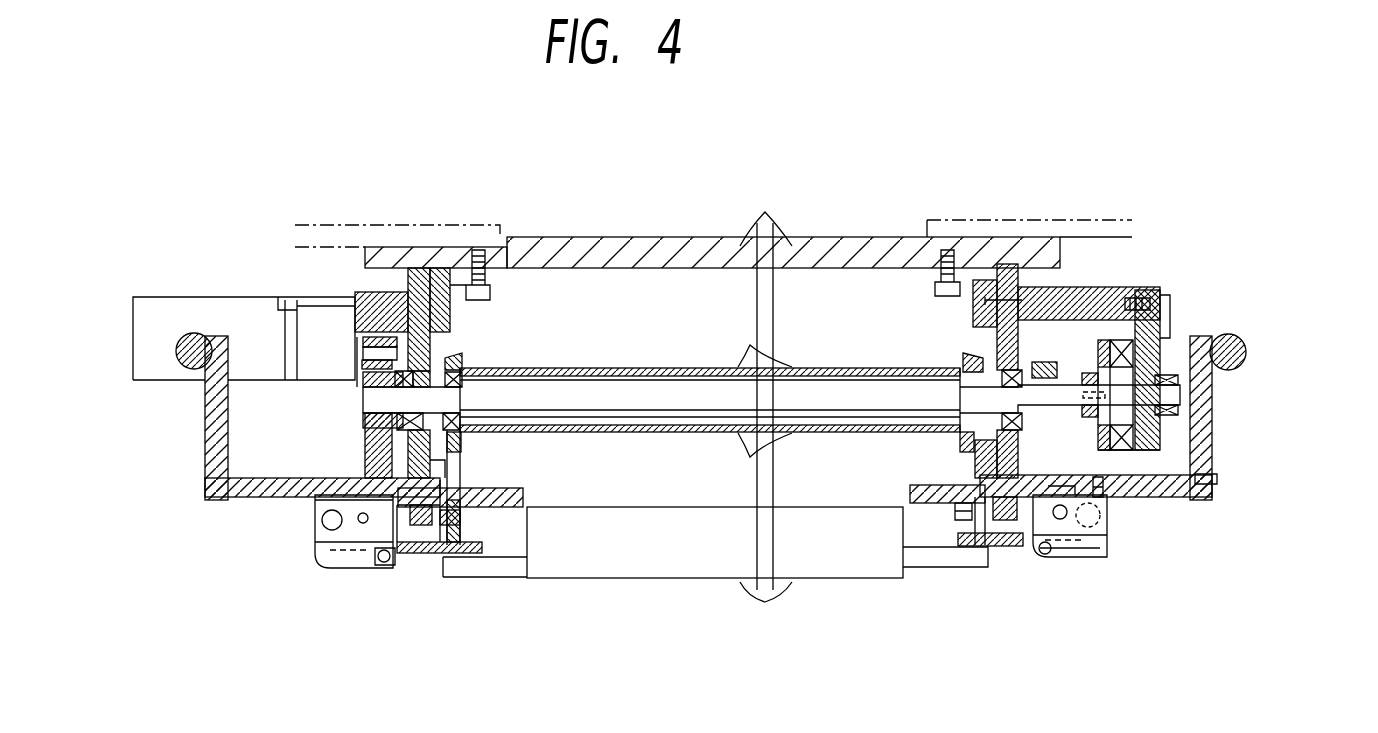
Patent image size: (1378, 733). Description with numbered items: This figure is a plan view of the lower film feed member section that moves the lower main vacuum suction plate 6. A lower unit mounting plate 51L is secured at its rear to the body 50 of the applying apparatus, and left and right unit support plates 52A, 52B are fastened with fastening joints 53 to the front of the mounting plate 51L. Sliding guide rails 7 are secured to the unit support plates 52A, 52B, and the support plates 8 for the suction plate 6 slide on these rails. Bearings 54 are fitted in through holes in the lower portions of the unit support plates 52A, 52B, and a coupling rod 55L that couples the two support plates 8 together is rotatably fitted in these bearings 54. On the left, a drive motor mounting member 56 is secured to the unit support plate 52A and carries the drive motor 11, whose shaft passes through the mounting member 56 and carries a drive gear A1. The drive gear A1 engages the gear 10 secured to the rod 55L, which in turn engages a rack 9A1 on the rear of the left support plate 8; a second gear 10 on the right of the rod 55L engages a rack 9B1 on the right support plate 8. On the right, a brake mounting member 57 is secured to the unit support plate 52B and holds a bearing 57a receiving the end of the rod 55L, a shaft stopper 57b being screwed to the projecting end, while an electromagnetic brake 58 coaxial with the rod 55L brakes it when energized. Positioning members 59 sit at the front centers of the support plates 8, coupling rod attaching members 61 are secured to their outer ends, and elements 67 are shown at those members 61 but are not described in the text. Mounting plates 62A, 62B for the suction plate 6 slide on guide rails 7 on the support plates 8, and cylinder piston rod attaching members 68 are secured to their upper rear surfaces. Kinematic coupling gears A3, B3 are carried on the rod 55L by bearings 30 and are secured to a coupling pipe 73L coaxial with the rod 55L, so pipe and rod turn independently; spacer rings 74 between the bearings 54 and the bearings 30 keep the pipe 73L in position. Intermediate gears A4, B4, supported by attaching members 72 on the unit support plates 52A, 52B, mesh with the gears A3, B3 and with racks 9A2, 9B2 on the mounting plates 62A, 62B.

The body 50 is at (385, 235).
The lower unit mounting plate 51L is at (765, 212).
The drive motor 11 is at (212, 310).
The stopper 67 is at (178, 346).
The coupling rod attaching members 61 is at (214, 442).
The support plates 8 is at (232, 500).
The drive motor mounting member 56 is at (382, 300).
The unit support plate 52A is at (418, 275).
The fastening joints 53 is at (478, 275).
The drive gear A1 is at (358, 338).
The gear 10 is at (365, 383).
The bearings 54 is at (372, 420).
The spacer rings 74 is at (450, 352).
The main vacuum suction plate kinematic coupling gear A3 is at (465, 366).
The bearings 30 is at (470, 392).
The main vacuum suction plate coupling pipe 73L is at (750, 345).
The coupling rod 55L is at (750, 457).
The intermediate gear attaching members 72 is at (463, 440).
The intermediate gear A4 is at (463, 466).
The rack 9A1 is at (362, 455).
The unit support plate 52B is at (1005, 280).
The main vacuum suction plate kinematic coupling gear B3 is at (980, 350).
The intermediate gear B4 is at (965, 464).
The brake mounting member 57 is at (1162, 290).
The bearing 57a is at (1167, 332).
The shaft stopper 57b is at (1182, 386).
The electromagnetic brake 58 is at (1128, 296).
The main vacuum suction plate 6 is at (765, 602).
The sliding guide rails 7 is at (332, 480).
The cylinder piston rod attaching members 68 is at (318, 522).
The positioning members 59 is at (322, 566).
The mounting plate 62A is at (445, 553).
The rack 9A2 is at (468, 545).
The mounting plate 62B is at (1010, 540).
The rack 9B1 is at (1098, 500).
The rack 9B2 is at (962, 520).